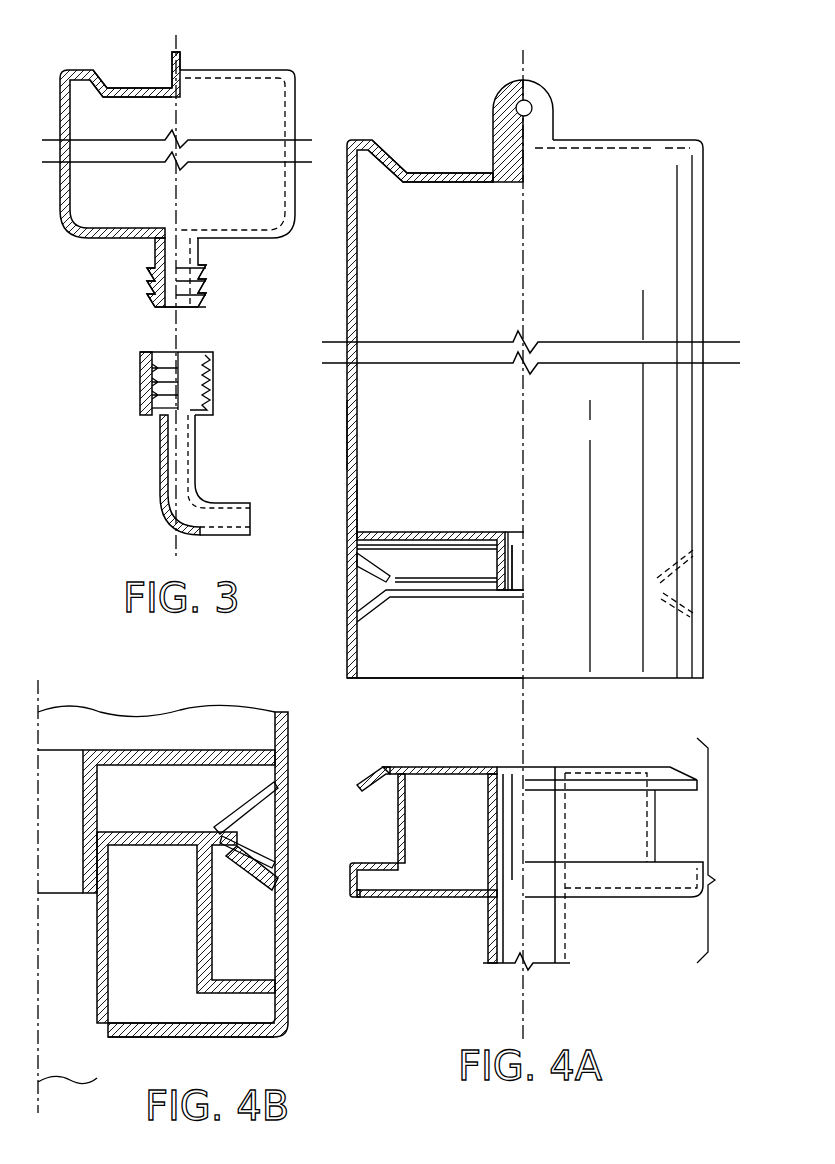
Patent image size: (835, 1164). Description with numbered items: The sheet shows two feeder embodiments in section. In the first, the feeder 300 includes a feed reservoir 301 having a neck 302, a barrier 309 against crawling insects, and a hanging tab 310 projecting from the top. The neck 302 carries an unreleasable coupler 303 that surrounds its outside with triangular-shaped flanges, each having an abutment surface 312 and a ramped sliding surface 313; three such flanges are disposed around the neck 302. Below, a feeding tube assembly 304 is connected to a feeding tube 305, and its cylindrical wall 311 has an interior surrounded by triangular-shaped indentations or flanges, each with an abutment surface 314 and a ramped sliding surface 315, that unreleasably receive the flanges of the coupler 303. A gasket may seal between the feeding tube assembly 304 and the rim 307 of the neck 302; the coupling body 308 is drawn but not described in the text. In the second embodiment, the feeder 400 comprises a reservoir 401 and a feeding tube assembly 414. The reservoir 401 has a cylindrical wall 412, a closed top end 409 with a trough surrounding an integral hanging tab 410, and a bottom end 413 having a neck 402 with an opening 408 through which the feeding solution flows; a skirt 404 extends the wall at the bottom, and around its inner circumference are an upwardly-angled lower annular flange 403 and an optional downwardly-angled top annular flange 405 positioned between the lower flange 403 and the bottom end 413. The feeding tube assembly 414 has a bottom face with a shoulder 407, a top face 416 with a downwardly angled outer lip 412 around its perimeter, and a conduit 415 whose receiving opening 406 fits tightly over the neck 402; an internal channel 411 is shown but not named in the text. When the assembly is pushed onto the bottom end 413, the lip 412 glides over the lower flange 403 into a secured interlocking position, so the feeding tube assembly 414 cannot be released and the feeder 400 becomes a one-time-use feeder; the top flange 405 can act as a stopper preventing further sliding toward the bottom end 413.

In FIG. 3, the feeder 300 is at (51, 61).
In FIG. 3, the feed reservoir 301 is at (263, 92).
In FIG. 3, the neck 302 is at (155, 245).
In FIG. 3, the unreleasable coupler 303 is at (150, 270).
In FIG. 3, the feeding tube assembly 304 is at (52, 305).
In FIG. 3, the feeding tube 305 is at (198, 455).
In FIG. 3, the rim 307 is at (195, 308).
In FIG. 3, the coupling 308 is at (150, 352).
In FIG. 3, the barrier 309 is at (115, 77).
In FIG. 3, the hanging tab 310 is at (186, 57).
In FIG. 3, the cylindrical wall 311 is at (148, 388).
In FIG. 3, the abutment surface 312 is at (205, 266).
In FIG. 3, the ramped sliding surface 313 is at (205, 280).
In FIG. 3, the abutment surface 314 is at (152, 415).
In FIG. 3, the ramped sliding surface 315 is at (150, 368).
In FIG. 4A, the feeder 400 is at (719, 104).
In FIG. 4A, the reservoir 401 is at (598, 205).
In FIG. 4A, the neck 402 is at (500, 587).
In FIG. 4A, the lower annular flange 403 is at (373, 622).
In FIG. 4B, the lower annular flange 403 is at (262, 880).
In FIG. 4A, the skirt 404 is at (348, 595).
In FIG. 4A, the top annular flange 405 is at (352, 572).
In FIG. 4B, the top annular flange 405 is at (217, 828).
In FIG. 4A, the receiving opening 406 is at (515, 767).
In FIG. 4B, the receiving opening 406 is at (65, 1043).
In FIG. 4A, the shoulder 407 is at (372, 860).
In FIG. 4B, the shoulder 407 is at (63, 772).
In FIG. 4A, the opening 408 is at (517, 550).
In FIG. 4A, the closed top end 409 is at (412, 148).
In FIG. 4A, the hanging tab 410 is at (552, 110).
In FIG. 4A, the channel 411 is at (365, 582).
In FIG. 4A, the outer lip 412 is at (348, 433).
In FIG. 4B, the outer lip 412 is at (270, 840).
In FIG. 4A, the bottom end 413 is at (377, 532).
In FIG. 4A, the feeding tube assembly 414 is at (715, 880).
In FIG. 4A, the conduit 415 is at (488, 933).
In FIG. 4A, the top face 416 is at (447, 766).
In FIG. 4B, the top face 416 is at (144, 832).